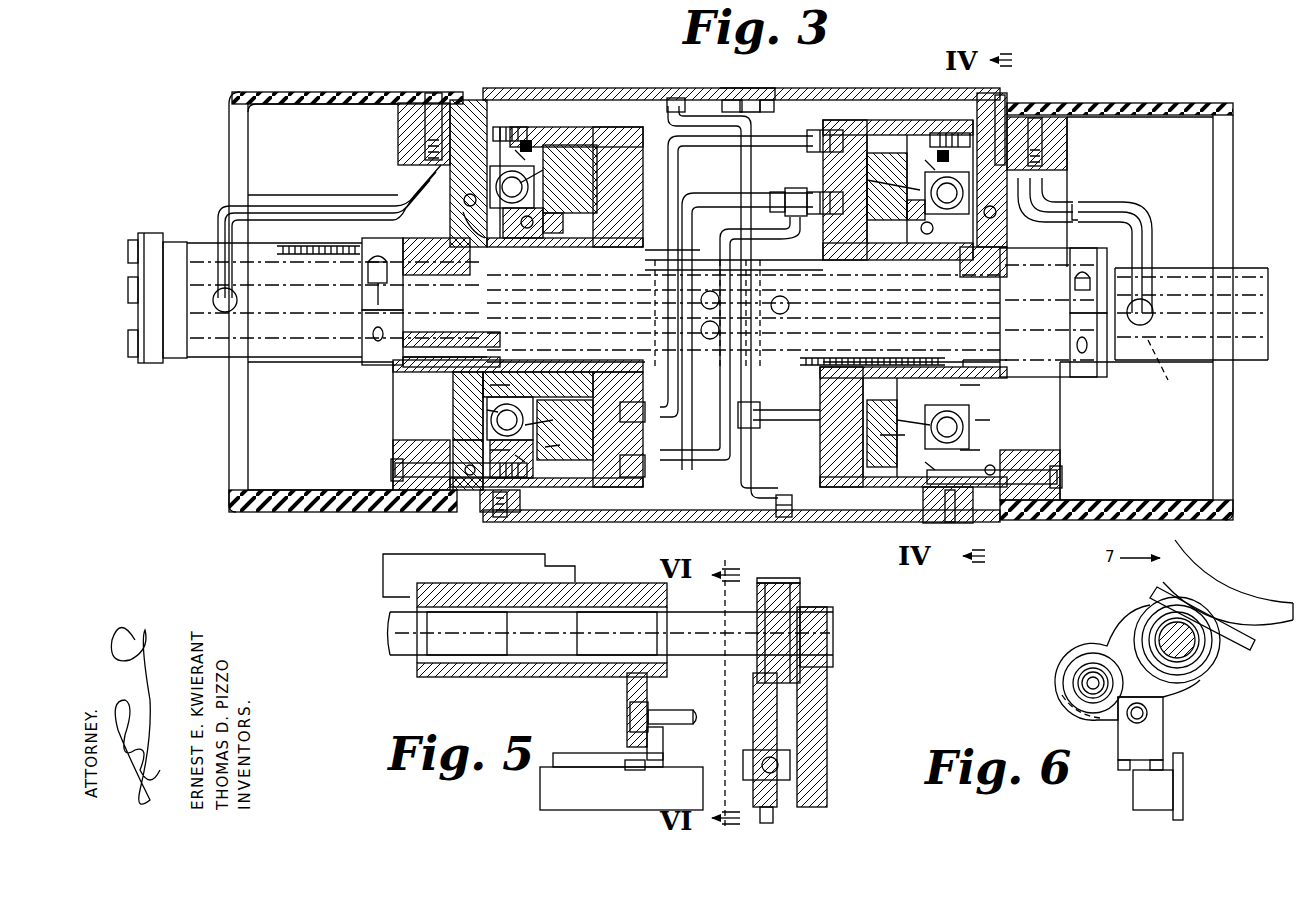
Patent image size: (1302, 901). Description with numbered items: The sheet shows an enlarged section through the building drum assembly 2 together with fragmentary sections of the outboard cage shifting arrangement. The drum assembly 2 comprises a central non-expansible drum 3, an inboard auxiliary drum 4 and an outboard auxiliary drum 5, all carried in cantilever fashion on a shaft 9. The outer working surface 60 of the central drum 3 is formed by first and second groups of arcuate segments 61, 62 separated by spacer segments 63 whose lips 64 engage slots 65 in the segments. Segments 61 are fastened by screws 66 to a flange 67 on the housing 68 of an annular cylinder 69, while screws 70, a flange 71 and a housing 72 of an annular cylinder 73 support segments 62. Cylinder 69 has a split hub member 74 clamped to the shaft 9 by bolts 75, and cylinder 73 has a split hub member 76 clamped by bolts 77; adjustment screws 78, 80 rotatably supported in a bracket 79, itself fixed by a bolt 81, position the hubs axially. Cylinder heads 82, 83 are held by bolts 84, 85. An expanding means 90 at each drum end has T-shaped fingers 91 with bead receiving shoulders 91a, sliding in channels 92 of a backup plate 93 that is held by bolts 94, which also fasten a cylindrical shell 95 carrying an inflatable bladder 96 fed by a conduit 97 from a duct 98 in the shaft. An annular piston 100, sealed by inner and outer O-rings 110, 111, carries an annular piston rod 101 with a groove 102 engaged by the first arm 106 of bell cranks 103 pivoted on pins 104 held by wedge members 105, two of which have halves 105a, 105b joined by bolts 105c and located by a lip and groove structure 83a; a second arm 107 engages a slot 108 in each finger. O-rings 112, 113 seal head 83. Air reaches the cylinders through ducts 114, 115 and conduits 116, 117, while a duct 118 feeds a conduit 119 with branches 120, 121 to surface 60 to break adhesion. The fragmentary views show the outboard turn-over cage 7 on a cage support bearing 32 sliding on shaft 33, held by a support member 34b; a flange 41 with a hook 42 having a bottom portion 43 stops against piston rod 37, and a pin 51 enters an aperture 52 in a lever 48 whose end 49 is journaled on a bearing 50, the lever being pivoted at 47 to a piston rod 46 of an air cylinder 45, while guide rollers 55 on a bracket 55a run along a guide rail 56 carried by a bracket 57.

In FIG. 3, the building drum assembly 2 is at (405, 46).
In FIG. 3, the central non-expansible drum 3 is at (618, 94).
In FIG. 3, the inboard auxiliary drum 4 is at (1160, 102).
In FIG. 3, the outboard auxiliary drum 5 is at (322, 91).
In FIG. 5, the outboard turn-over cage 7 is at (372, 577).
In FIG. 6, the outboard turn-over cage 7 is at (1160, 558).
In FIG. 3, the shaft 9 is at (262, 250).
In FIG. 5, the cage support bearing 32 is at (455, 678).
In FIG. 6, the cage support bearing 32 is at (1160, 612).
In FIG. 5, the cage support shaft 33 is at (398, 648).
In FIG. 6, the cage support shaft 33 is at (1185, 650).
In FIG. 5, the support member 34b is at (828, 677).
In FIG. 6, the piston rod 37 is at (1094, 668).
In FIG. 5, the flange 41 is at (626, 690).
In FIG. 6, the flange 41 is at (1125, 603).
In FIG. 6, the hook 42 is at (1064, 676).
In FIG. 6, the bottom portion of hook 43 is at (1078, 700).
In FIG. 6, the air cylinder 45 is at (1085, 666).
In FIG. 5, the piston rod 46 is at (775, 815).
In FIG. 5, the pivotal connection 47 is at (780, 765).
In FIG. 5, the lever 48 is at (753, 744).
In FIG. 5, the opposite end of lever 49 is at (786, 595).
In FIG. 5, the bearing 50 is at (795, 612).
In FIG. 5, the pin 51 is at (680, 712).
In FIG. 6, the pin 51 is at (1147, 709).
In FIG. 5, the aperture 52 is at (755, 716).
In FIG. 6, the aperture 52 is at (1145, 717).
In FIG. 5, the guide rollers 55 is at (625, 770).
In FIG. 6, the guide rollers 55 is at (1125, 770).
In FIG. 5, the bracket 55a is at (640, 746).
In FIG. 6, the bracket 55a is at (1160, 750).
In FIG. 5, the guide rail 56 is at (640, 808).
In FIG. 6, the guide rail 56 is at (1135, 800).
In FIG. 5, the bracket 57 is at (580, 758).
In FIG. 6, the bracket 57 is at (1185, 765).
In FIG. 3, the outer working surface 60 is at (666, 96).
In FIG. 3, the first group of arcuate segments 61 is at (588, 90).
In FIG. 3, the second group of arcuate segments 62 is at (848, 96).
In FIG. 3, the arcuate spacer segments 63 is at (732, 98).
In FIG. 3, the lips 64 is at (754, 96).
In FIG. 3, the slots 65 is at (768, 104).
In FIG. 3, the screws 66 is at (508, 512).
In FIG. 3, the flange 67 is at (530, 125).
In FIG. 3, the housing 68 is at (604, 127).
In FIG. 3, the annular cylinder 69 is at (650, 150).
In FIG. 3, the screws 70 is at (960, 102).
In FIG. 3, the flange 71 is at (955, 108).
In FIG. 3, the housing 72 is at (830, 125).
In FIG. 3, the annular cylinder 73 is at (790, 128).
In FIG. 3, the split hub member 74 is at (380, 245).
In FIG. 3, the bolts 75 is at (366, 280).
In FIG. 3, the split hub member 76 is at (1078, 258).
In FIG. 3, the bolts 77 is at (1092, 278).
In FIG. 3, the adjustment screw 78 is at (336, 250).
In FIG. 3, the bracket 79 is at (148, 236).
In FIG. 3, the adjustment screw 80 is at (272, 360).
In FIG. 3, the bolt 81 is at (129, 288).
In FIG. 3, the cylinder head 82 is at (545, 185).
In FIG. 3, the cylinder head 83 is at (925, 175).
In FIG. 3, the lip and groove structure 83a is at (530, 175).
In FIG. 3, the bolts 84 is at (520, 130).
In FIG. 3, the bolts 85 is at (945, 140).
In FIG. 3, the expanding means 90 is at (471, 91).
In FIG. 3, the fingers 91 is at (463, 95).
In FIG. 3, the bead receiving shoulders 91a is at (479, 96).
In FIG. 3, the channels 92 is at (470, 185).
In FIG. 3, the backup plate 93 is at (468, 206).
In FIG. 3, the bolts 94 is at (393, 468).
In FIG. 3, the cylindrical shell 95 is at (300, 106).
In FIG. 3, the inflatable bladder 96 is at (232, 104).
In FIG. 3, the conduit 97 is at (327, 206).
In FIG. 3, the duct 98 is at (300, 283).
In FIG. 3, the annular piston 100 is at (656, 186).
In FIG. 3, the annular piston rod 101 is at (618, 238).
In FIG. 3, the circumferential groove 102 is at (520, 205).
In FIG. 3, the bell cranks 103 is at (512, 200).
In FIG. 3, the pins 104 is at (548, 172).
In FIG. 3, the wedge shaped members 105 is at (548, 158).
In FIG. 3, the wedge half 105a is at (540, 430).
In FIG. 3, the wedge half 105b is at (493, 410).
In FIG. 3, the bolts 105c is at (493, 392).
In FIG. 3, the first arm 106 is at (540, 225).
In FIG. 3, the second arm 107 is at (512, 212).
In FIG. 3, the slot 108 is at (482, 210).
In FIG. 3, the inner O-ring 110 is at (590, 310).
In FIG. 3, the outer O-ring 111 is at (633, 150).
In FIG. 3, the inner O-ring 112 is at (550, 213).
In FIG. 3, the outer O-ring 113 is at (562, 132).
In FIG. 3, the duct 114 is at (738, 242).
In FIG. 3, the duct 115 is at (1169, 365).
In FIG. 3, the conduit 116 is at (726, 236).
In FIG. 3, the conduit 117 is at (670, 166).
In FIG. 3, the compressed air supply duct 118 is at (835, 290).
In FIG. 3, the conduit 119 is at (765, 418).
In FIG. 3, the branch 120 is at (748, 175).
In FIG. 3, the branch 121 is at (752, 435).